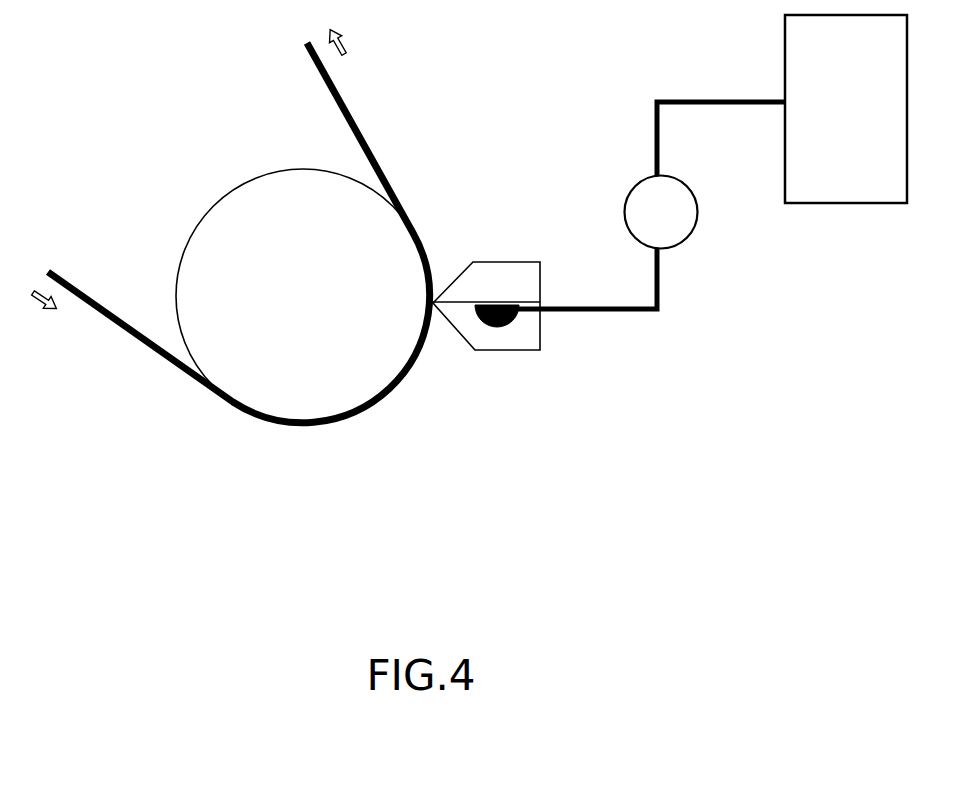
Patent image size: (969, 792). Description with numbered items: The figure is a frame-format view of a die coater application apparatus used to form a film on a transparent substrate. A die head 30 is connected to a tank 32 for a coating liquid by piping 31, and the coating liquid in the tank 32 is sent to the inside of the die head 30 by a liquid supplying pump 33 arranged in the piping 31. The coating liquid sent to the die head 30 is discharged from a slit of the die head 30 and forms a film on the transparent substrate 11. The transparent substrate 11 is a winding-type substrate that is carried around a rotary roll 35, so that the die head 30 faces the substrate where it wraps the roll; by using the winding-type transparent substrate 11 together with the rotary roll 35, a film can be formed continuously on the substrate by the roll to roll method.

The transparent substrate 11 is at (142, 340).
The die head 30 is at (519, 335).
The piping 31 is at (660, 300).
The tank for a coating liquid 32 is at (835, 162).
The liquid supplying pump 33 is at (638, 225).
The rotary roll 35 is at (303, 363).